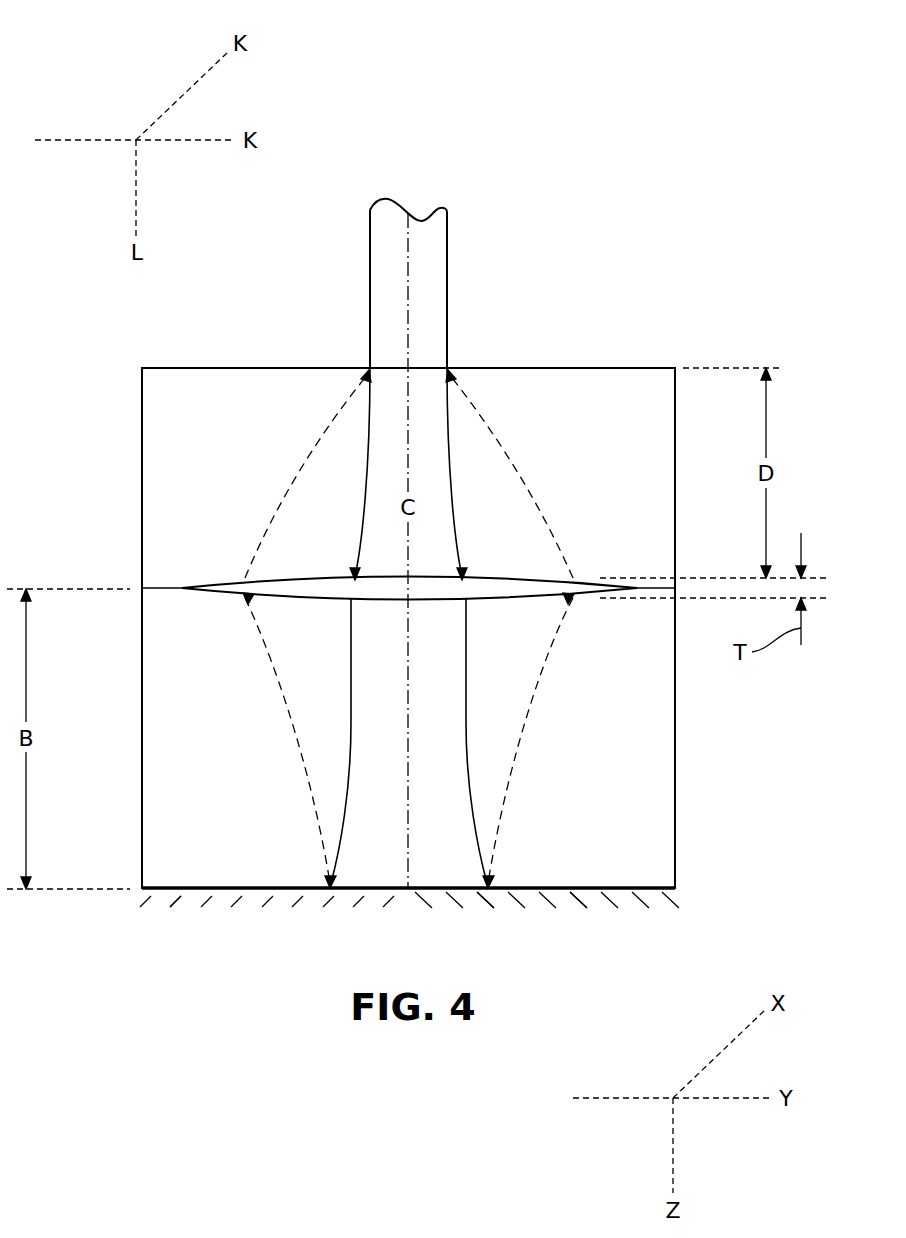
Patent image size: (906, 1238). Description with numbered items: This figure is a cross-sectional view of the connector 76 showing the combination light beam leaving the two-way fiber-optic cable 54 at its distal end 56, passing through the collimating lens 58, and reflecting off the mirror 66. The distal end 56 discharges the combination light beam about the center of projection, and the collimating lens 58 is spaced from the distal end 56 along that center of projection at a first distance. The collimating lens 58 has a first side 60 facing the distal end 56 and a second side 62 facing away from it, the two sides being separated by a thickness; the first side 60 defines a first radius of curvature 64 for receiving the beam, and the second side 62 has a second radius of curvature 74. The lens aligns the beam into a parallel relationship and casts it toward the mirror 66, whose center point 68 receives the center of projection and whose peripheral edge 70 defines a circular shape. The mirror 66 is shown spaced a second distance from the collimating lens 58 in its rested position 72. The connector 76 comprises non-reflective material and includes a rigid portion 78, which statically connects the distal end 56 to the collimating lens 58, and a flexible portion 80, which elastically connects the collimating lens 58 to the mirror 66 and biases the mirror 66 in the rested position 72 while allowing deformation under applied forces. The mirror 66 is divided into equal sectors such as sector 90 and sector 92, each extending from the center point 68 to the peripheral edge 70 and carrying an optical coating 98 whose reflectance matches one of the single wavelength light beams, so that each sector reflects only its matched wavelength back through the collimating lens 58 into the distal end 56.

The two-way fiber-optic cable 54 is at (368, 243).
The distal end 56 is at (387, 358).
The collimating lens 58 is at (572, 578).
The first side 60 is at (215, 580).
The second side 62 is at (512, 600).
The first radius of curvature 64 is at (408, 578).
The mirror 66 is at (213, 898).
The center point 68 is at (410, 888).
The peripheral edge 70 is at (140, 878).
The rested position 72 is at (643, 235).
The second radius of curvature 74 is at (407, 600).
The connector 76 is at (510, 364).
The rigid portion 78 is at (142, 478).
The flexible portion 80 is at (677, 700).
The sector 90 is at (258, 892).
The sector 92 is at (500, 890).
The optical coating 98 is at (578, 888).